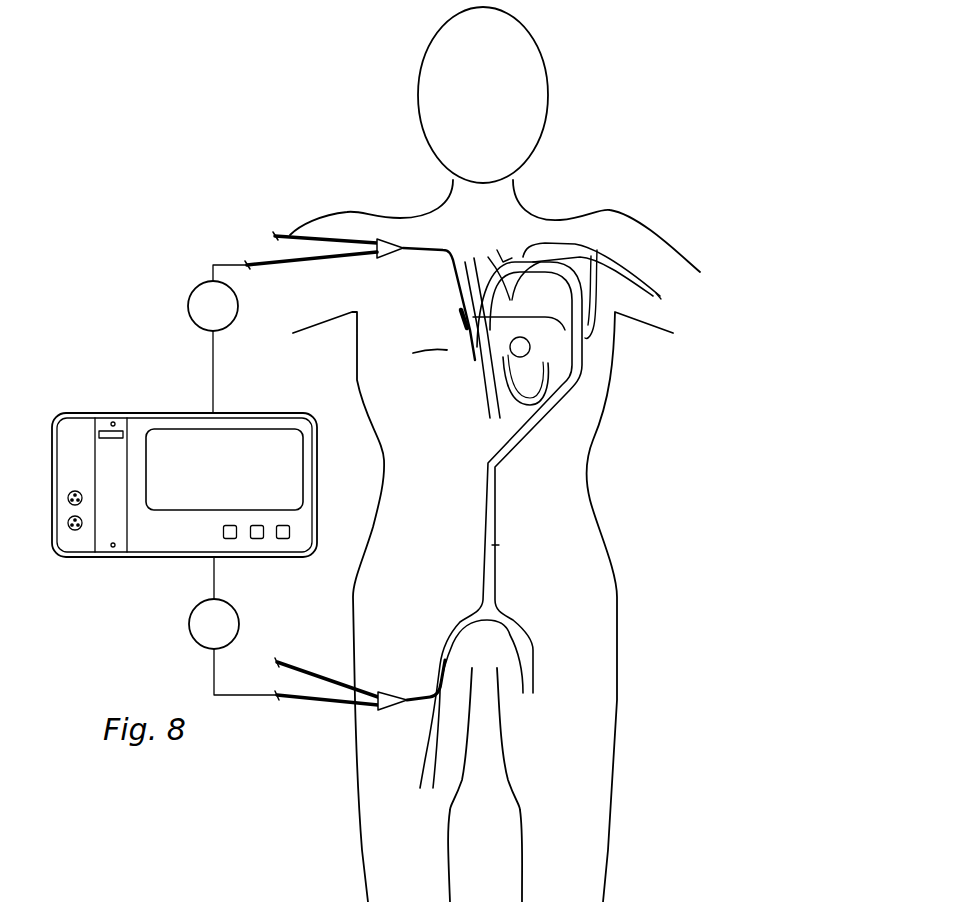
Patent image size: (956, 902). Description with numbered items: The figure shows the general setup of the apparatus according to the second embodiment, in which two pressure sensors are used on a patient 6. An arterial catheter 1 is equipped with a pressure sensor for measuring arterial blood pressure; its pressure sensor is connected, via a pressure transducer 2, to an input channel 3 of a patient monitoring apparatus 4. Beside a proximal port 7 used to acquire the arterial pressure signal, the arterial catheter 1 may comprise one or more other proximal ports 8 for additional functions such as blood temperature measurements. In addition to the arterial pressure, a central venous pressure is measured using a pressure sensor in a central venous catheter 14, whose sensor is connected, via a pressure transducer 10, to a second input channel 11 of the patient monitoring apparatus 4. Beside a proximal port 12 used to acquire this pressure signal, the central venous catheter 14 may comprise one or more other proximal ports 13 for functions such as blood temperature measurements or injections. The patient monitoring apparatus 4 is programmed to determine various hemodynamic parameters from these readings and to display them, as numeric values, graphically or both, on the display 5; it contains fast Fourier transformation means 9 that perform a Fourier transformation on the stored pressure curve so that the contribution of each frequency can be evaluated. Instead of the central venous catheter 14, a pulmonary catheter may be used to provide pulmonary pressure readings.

The arterial catheter 1 is at (420, 702).
The pressure transducer 2 is at (197, 629).
The input channel 3 is at (210, 561).
The patient monitoring apparatus 4 is at (155, 540).
The display 5 is at (203, 478).
The patient 6 is at (398, 223).
The proximal port 7 is at (300, 703).
The proximal port 8 is at (295, 668).
The fast Fourier transformation means 9 is at (103, 548).
The pressure transducer 10 is at (195, 297).
The second input channel 11 is at (213, 413).
The proximal port 12 is at (313, 260).
The proximal port 13 is at (295, 234).
The central venous catheter 14 is at (457, 297).